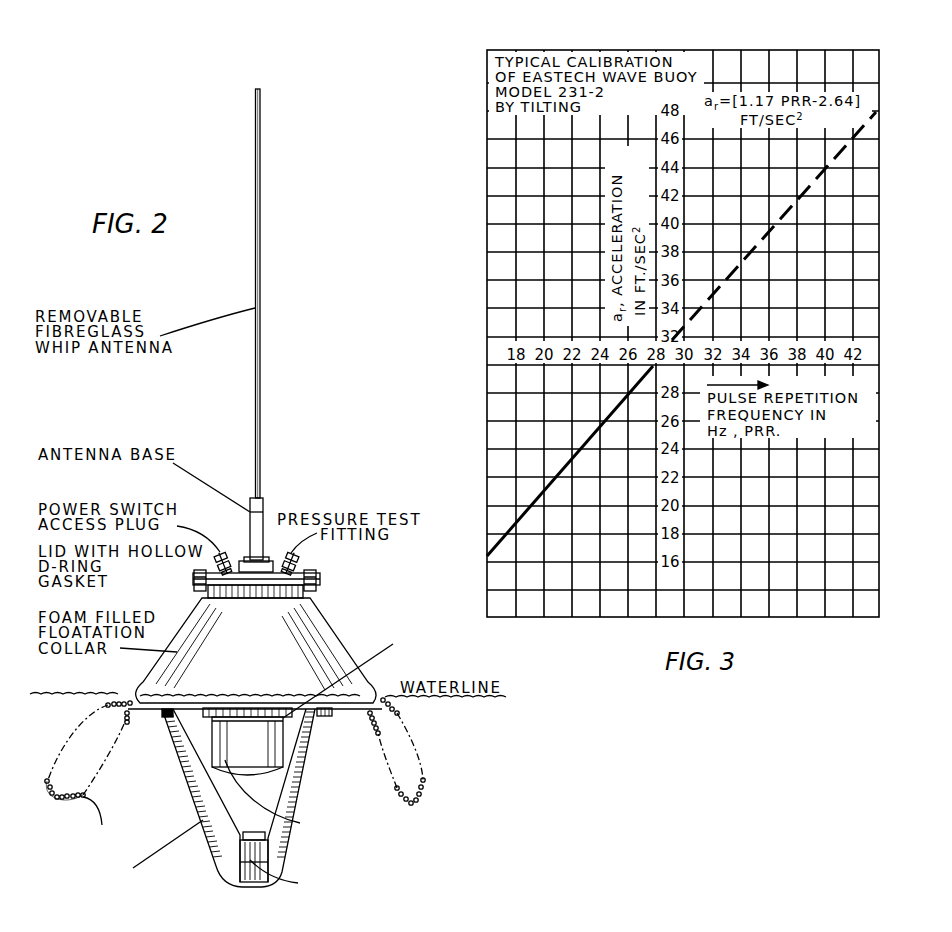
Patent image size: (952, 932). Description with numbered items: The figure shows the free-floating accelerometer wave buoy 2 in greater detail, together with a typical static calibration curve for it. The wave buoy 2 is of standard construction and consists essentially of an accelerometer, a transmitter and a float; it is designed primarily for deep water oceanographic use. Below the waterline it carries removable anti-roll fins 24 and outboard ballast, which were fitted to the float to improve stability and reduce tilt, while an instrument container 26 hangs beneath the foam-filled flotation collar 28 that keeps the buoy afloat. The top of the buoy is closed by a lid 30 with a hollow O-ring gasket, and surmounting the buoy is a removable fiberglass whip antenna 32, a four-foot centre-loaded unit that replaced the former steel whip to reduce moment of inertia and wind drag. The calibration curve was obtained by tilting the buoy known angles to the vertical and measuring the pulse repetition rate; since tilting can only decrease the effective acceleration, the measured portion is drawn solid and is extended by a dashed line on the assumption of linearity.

The free-floating accelerometer wave buoy 2 is at (278, 766).
The removable anti-roll fins 24 is at (203, 847).
The instrument container 26 is at (257, 752).
The foam-filled flotation collar 28 is at (266, 651).
The lid 30 is at (193, 580).
The removable fiberglass whip antenna 32 is at (255, 374).